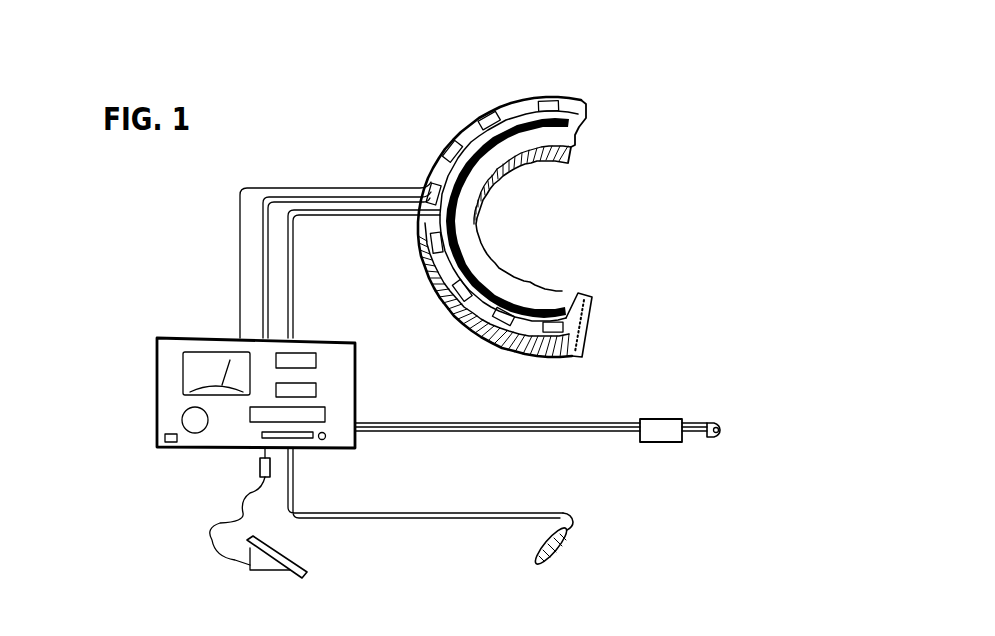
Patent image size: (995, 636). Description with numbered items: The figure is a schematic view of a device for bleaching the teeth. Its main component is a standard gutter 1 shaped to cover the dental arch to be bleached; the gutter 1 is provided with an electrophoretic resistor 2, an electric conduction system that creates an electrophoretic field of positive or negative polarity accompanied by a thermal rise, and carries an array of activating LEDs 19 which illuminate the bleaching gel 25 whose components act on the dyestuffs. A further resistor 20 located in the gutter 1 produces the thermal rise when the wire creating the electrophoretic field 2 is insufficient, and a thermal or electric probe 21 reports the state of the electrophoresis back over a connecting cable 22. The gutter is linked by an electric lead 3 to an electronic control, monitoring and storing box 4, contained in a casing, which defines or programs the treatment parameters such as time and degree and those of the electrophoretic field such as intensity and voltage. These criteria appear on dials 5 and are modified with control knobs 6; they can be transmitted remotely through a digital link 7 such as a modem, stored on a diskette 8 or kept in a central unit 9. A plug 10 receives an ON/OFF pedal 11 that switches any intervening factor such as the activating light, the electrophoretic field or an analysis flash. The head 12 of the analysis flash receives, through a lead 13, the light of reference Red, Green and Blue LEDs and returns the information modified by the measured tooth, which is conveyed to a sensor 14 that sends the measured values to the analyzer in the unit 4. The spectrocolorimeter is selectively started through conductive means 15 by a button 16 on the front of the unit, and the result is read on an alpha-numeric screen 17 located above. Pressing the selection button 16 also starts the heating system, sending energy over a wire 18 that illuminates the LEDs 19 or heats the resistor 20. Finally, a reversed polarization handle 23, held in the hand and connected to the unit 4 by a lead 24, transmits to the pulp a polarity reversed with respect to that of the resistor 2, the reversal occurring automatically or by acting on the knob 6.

The standard gutter 1 is at (592, 125).
The electrophoretic resistor 2 is at (557, 130).
The electric lead 3 is at (350, 213).
The electronic control, monitoring and storing box 4 is at (322, 339).
The dial 5 is at (195, 368).
The control knob 6 is at (195, 420).
The digital link 7 is at (162, 433).
The diskette 8 is at (307, 440).
The central unit 9 is at (325, 420).
The plug 10 is at (324, 438).
The ON/OFF pedal 11 is at (265, 565).
The head 12 is at (719, 430).
The lead 13 is at (705, 423).
The sensor 14 is at (660, 420).
The conductive means 15 is at (612, 423).
The button 16 is at (317, 388).
The alpha-numeric screen 17 is at (317, 362).
The wire 18 is at (308, 203).
The activating LEDs 19 is at (545, 101).
The resistor 20 is at (470, 128).
The thermal or electric probe 21 is at (419, 160).
The connecting cable 22 is at (337, 187).
The reversed polarization handle 23 is at (557, 548).
The lead 24 is at (467, 517).
The bleaching gel 25 is at (602, 300).